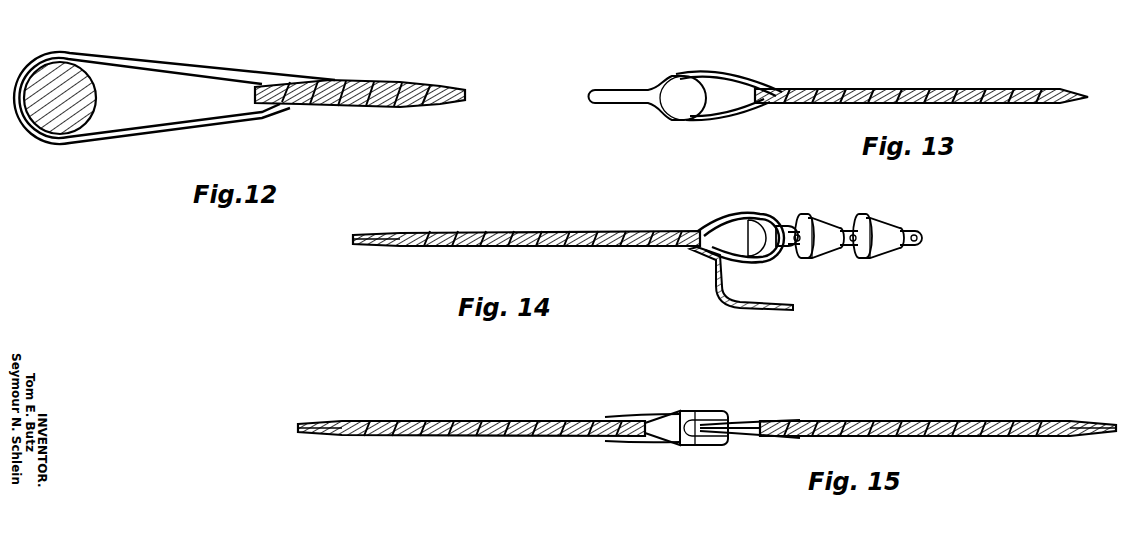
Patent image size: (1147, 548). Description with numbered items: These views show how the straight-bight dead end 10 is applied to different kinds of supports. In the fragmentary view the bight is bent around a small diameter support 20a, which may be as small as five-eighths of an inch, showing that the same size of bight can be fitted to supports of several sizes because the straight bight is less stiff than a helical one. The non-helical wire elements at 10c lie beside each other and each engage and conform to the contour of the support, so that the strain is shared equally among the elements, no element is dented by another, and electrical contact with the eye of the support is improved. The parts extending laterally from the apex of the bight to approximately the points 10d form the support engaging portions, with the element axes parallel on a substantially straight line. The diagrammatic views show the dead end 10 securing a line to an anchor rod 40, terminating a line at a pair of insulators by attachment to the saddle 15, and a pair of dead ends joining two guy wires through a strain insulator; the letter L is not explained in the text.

In FIG. 13, the dead end 10 is at (945, 86).
In FIG. 14, the dead end 10 is at (495, 230).
In FIG. 15, the dead end 10 is at (478, 418).
In FIG. 12, the non-helical wire elements at the bight 10c is at (15, 98).
In FIG. 12, the support engaging portions 10d is at (213, 65).
In FIG. 13, the support engaging portions 10d is at (705, 68).
In FIG. 14, the support engaging portions 10d is at (757, 212).
In FIG. 15, the support engaging portions 10d is at (680, 408).
In FIG. 12, the support 20a is at (97, 100).
In FIG. 13, the anchor rod 40 is at (607, 104).
In FIG. 14, the saddle 15 is at (803, 256).
In FIG. 12, the lay length L is at (450, 108).
In FIG. 13, the lay length L is at (822, 103).
In FIG. 14, the lay length L is at (512, 247).
In FIG. 15, the lay length L is at (936, 452).